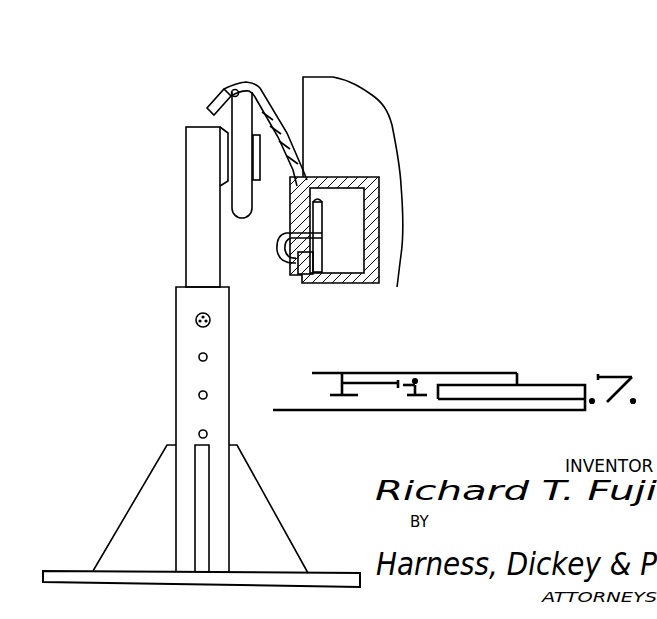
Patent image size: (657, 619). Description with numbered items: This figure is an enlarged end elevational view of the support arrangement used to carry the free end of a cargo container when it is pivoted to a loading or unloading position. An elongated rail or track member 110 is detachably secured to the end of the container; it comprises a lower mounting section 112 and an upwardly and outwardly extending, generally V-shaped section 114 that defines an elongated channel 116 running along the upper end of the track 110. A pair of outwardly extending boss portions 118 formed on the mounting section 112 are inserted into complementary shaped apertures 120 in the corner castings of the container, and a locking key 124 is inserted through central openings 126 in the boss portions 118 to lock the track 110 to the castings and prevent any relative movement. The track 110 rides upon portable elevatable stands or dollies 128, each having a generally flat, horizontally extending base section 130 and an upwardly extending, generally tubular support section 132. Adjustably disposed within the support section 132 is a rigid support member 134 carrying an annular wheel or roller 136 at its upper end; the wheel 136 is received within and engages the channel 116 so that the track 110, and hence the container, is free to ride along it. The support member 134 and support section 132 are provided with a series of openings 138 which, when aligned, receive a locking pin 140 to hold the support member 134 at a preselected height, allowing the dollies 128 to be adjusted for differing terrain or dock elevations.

The track member 110 is at (287, 130).
The lower mounting section 112 is at (293, 262).
The V-shaped section 114 is at (262, 110).
The elongated channel 116 is at (234, 96).
The boss portions 118 is at (318, 250).
The apertures 120 is at (318, 232).
The locking key 124 is at (328, 230).
The central openings 126 is at (322, 235).
The dollies 128 is at (285, 518).
The base sections 130 is at (65, 571).
The support sections 132 is at (186, 373).
The support member 134 is at (187, 230).
The wheel 136 is at (237, 186).
The openings 138 is at (206, 357).
The locking pin 140 is at (197, 318).